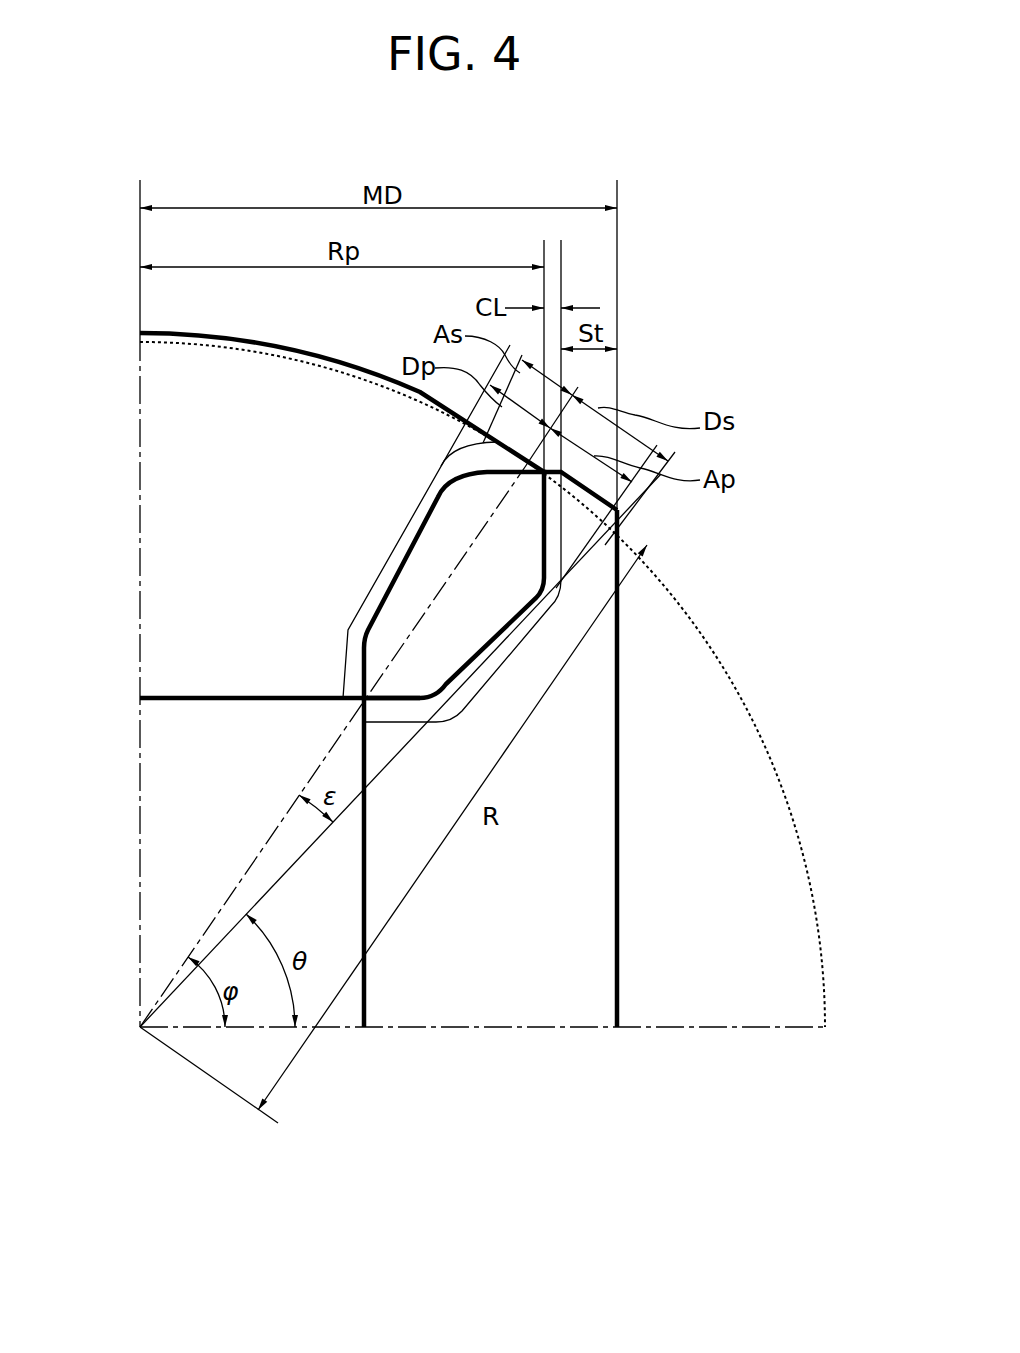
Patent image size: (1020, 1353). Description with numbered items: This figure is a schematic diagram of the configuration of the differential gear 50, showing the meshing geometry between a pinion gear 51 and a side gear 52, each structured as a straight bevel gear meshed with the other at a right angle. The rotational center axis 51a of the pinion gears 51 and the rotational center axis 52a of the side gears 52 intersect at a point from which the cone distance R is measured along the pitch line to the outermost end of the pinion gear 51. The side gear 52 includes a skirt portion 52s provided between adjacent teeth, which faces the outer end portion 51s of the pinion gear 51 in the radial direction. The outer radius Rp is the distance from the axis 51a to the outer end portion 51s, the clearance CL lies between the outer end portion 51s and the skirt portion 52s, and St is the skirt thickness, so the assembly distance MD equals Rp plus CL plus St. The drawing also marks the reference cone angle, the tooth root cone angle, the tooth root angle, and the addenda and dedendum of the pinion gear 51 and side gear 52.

The differential gear 50 is at (677, 338).
The pinion gear 51 is at (158, 512).
The rotational center axis of the pinion gears 51a is at (132, 824).
The outer end portion of the pinion gears 51s is at (611, 580).
The side gear 52 is at (525, 1013).
The rotational center axis of the side gears 52a is at (330, 1030).
The skirt portion 52s is at (573, 518).